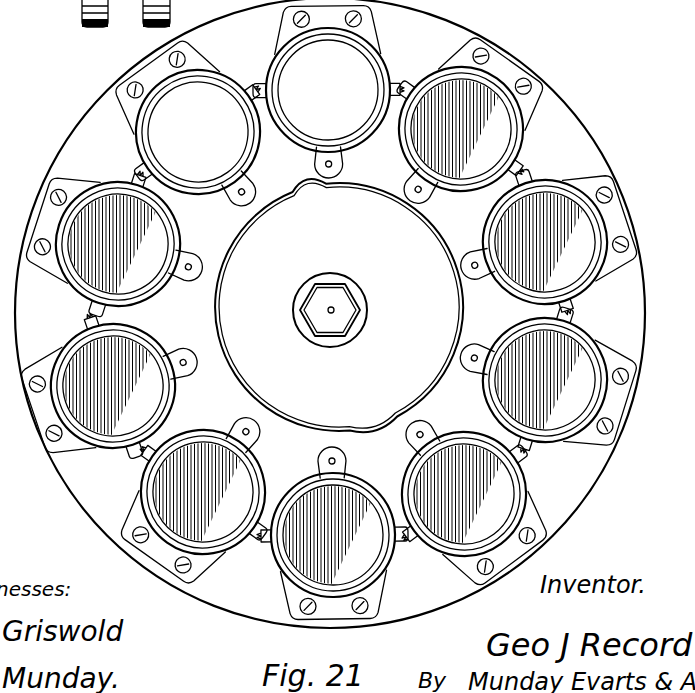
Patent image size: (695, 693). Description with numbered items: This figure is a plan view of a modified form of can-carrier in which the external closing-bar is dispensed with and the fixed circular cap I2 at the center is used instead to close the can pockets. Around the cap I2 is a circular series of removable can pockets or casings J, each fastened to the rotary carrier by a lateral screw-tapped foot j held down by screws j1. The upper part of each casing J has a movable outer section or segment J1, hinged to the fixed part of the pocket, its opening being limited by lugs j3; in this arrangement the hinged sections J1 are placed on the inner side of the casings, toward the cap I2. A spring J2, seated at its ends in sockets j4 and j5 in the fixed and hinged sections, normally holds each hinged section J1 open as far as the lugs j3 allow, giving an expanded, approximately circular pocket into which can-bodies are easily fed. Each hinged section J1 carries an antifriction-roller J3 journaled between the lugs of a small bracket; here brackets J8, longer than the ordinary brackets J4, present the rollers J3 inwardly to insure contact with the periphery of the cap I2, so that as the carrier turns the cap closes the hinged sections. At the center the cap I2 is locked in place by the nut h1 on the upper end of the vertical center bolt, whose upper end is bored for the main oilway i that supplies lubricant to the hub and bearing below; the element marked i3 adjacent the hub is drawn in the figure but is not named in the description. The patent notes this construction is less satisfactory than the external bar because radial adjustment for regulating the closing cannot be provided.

The screw-tapped foot j is at (623, 403).
The can pocket or casing J is at (213, 73).
The movable outer section or segment J1 is at (208, 427).
The spring J2 is at (228, 542).
The antifriction-roller J3 is at (242, 210).
The bracket J4 is at (188, 347).
The bracket J8 is at (520, 497).
The screw j1 is at (474, 570).
The lug j3 is at (398, 530).
The socket j4 is at (566, 314).
The socket j5 is at (580, 297).
The circular cap I2 is at (339, 305).
The main oilway i is at (334, 310).
The hub i3 is at (331, 347).
The nut h1 is at (346, 322).